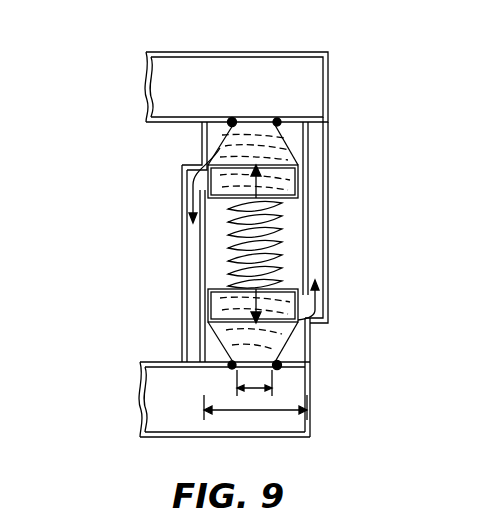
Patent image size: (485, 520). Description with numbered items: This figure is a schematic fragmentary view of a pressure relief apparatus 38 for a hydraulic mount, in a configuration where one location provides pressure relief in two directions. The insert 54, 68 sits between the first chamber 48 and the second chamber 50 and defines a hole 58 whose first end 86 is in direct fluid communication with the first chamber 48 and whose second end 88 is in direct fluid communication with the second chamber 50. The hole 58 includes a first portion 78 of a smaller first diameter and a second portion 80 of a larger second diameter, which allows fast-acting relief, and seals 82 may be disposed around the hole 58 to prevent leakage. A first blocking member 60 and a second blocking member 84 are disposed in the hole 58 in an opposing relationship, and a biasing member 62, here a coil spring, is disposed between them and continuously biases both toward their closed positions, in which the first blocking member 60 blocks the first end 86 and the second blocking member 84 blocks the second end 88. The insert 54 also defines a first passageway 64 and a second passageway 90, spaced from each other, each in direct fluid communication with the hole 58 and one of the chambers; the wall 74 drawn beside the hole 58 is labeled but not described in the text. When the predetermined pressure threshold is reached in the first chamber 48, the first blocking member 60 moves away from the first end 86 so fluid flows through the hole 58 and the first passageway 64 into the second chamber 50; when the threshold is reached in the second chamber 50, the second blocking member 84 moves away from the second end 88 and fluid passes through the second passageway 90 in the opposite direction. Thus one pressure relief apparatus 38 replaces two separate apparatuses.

The pressure relief apparatus 38 is at (139, 62).
The first chamber 48 is at (136, 98).
The second chamber 50 is at (136, 416).
The insert 54 is at (363, 397).
The hole 58 is at (249, 187).
The first blocking member 60 is at (207, 143).
The biasing member 62 is at (300, 190).
The first passageway 64 is at (182, 228).
The insert 68 is at (310, 417).
The sleeve 74 is at (290, 292).
The first portion 78 is at (257, 120).
The second portion 80 is at (290, 140).
The seal 82 is at (233, 118).
The second blocking member 84 is at (213, 297).
The first end 86 is at (281, 120).
The second end 88 is at (283, 368).
The second passageway 90 is at (272, 182).